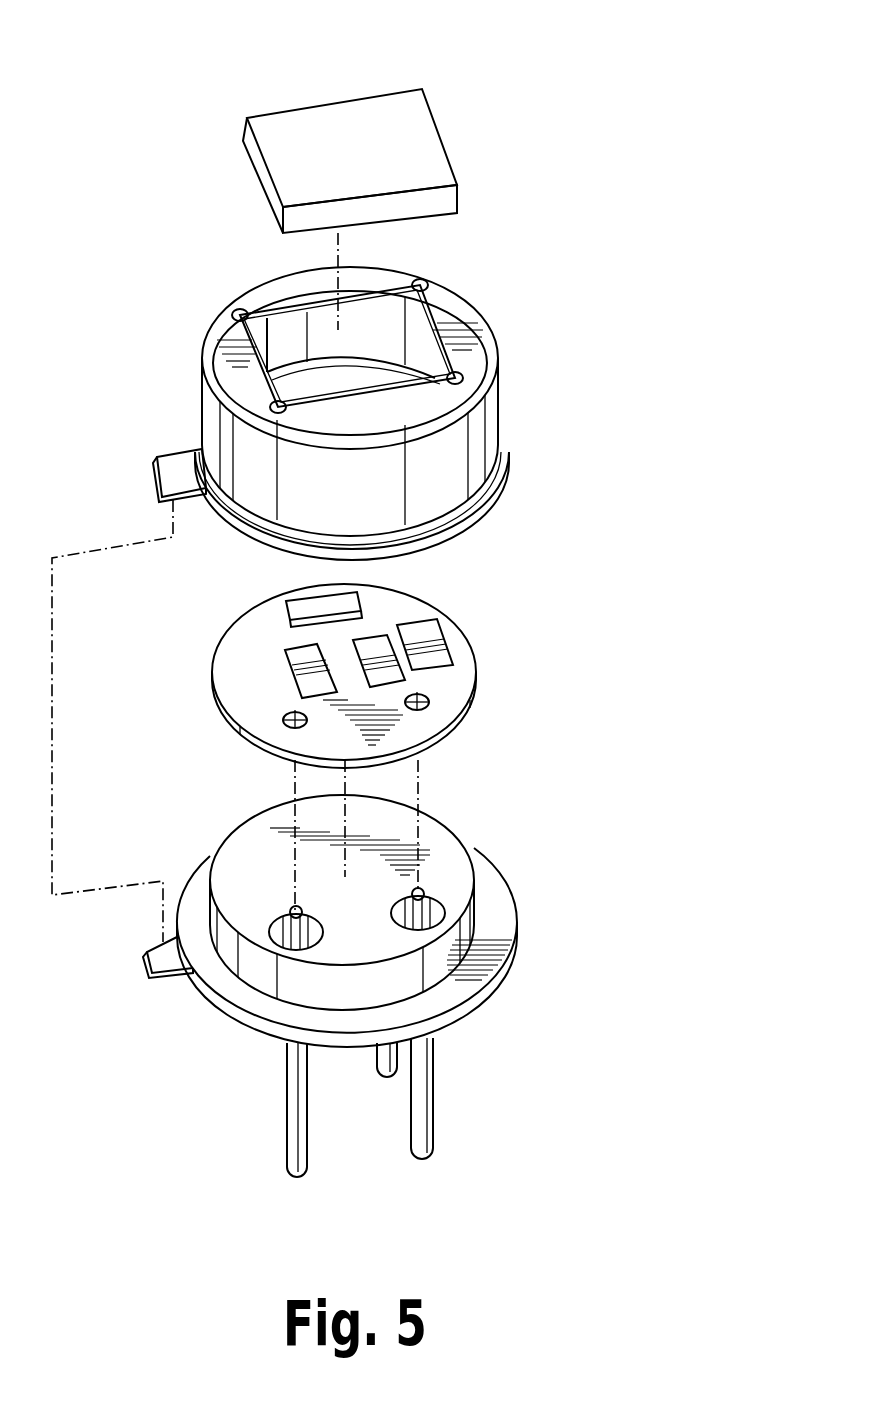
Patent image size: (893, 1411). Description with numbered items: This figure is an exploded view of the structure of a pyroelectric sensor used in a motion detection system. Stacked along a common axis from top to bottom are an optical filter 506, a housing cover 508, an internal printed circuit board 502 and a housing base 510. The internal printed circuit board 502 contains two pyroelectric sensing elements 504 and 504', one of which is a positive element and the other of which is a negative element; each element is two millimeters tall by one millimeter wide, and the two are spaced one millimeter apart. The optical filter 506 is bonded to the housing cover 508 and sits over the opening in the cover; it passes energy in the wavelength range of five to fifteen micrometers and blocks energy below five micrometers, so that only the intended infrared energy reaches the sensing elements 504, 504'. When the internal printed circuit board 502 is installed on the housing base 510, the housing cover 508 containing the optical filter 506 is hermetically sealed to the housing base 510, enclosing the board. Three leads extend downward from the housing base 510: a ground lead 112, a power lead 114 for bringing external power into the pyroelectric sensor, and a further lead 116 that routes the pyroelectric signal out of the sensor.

The internal printed circuit board 502 is at (186, 729).
The pyroelectric sensing element 504 is at (442, 617).
The pyroelectric sensing element 504' is at (254, 635).
The optical filter 506 is at (362, 85).
The housing cover 508 is at (178, 338).
The housing base 510 is at (528, 884).
The ground lead 112 is at (377, 1063).
The power lead 114 is at (293, 1148).
The lead 116 is at (433, 1130).